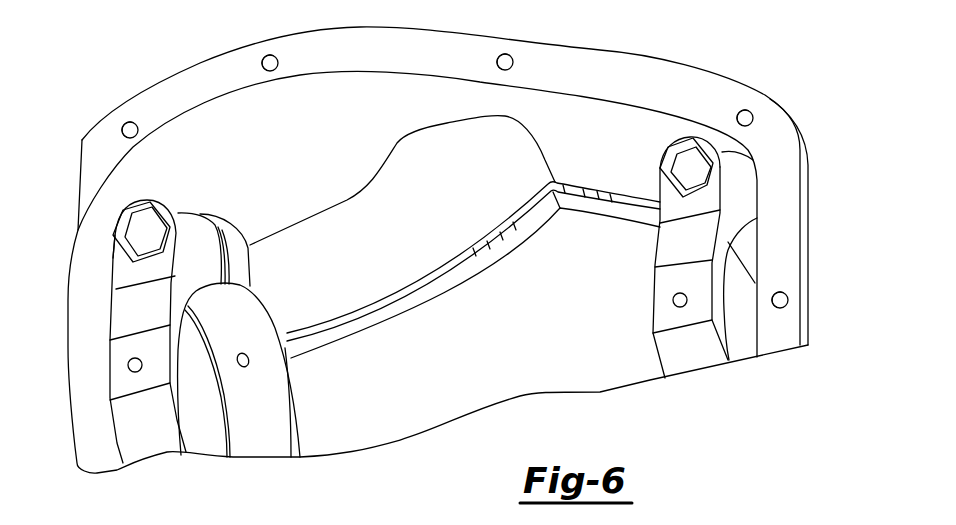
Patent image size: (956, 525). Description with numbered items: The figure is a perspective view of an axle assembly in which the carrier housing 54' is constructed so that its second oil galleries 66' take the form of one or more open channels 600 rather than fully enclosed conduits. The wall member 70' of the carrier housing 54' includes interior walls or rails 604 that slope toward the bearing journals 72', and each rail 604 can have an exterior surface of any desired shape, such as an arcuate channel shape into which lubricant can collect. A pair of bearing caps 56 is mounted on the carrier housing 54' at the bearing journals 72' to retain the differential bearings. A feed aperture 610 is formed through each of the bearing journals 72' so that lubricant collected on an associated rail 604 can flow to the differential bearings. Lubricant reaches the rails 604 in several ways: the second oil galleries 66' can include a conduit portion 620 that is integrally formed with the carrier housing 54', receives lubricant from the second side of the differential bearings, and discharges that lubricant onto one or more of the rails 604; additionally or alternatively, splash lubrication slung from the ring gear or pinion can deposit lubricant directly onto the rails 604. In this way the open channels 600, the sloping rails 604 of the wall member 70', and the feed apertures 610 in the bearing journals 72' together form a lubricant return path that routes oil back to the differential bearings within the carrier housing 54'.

The carrier housing 54' is at (438, 246).
The bearing cap 56 is at (125, 273).
The bearing journal 72' is at (229, 231).
The second oil gallery 66' is at (473, 257).
The conduit portion 620 is at (557, 182).
The open channel 600 is at (405, 292).
The rail 604 is at (447, 283).
The feed aperture 610 is at (240, 367).
The wall member 70' is at (402, 311).